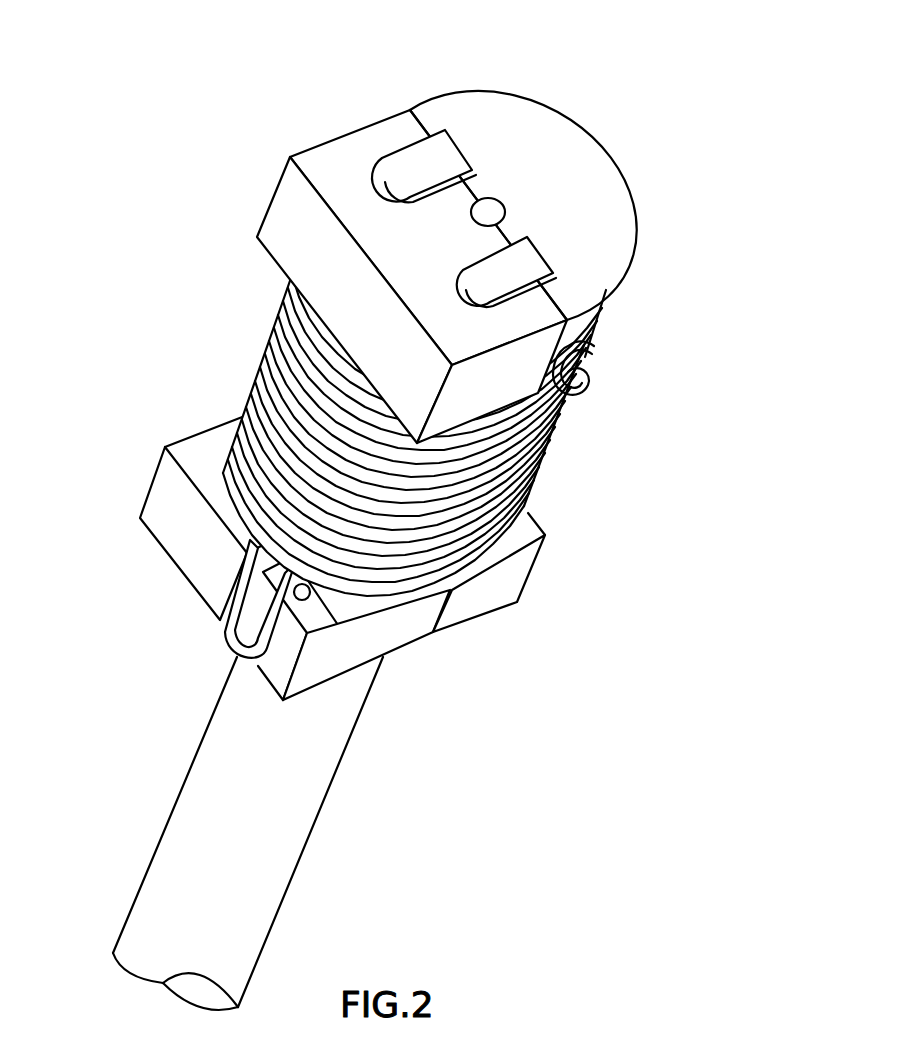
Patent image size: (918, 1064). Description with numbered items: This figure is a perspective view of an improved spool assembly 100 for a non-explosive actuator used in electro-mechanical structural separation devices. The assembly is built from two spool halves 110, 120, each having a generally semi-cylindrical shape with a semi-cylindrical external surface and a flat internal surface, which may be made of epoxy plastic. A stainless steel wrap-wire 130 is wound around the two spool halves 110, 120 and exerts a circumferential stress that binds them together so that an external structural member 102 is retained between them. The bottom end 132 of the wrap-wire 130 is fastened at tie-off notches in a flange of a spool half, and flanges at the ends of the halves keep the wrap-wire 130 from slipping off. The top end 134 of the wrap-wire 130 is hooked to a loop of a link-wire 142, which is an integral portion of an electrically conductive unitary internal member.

The spool assembly 100 is at (710, 125).
The external structural member 102 is at (163, 845).
The spool half 110 is at (283, 213).
The spool half 120 is at (608, 225).
The wrap-wire 130 is at (275, 352).
The bottom end of the wrap-wire 132 is at (233, 656).
The top end of the wrap-wire 134 is at (592, 370).
The link-wire 142 is at (577, 347).